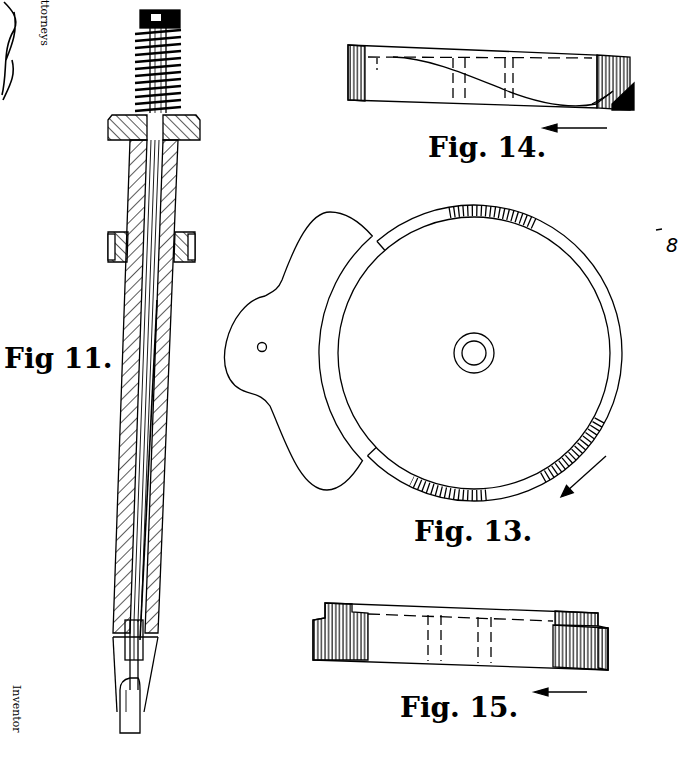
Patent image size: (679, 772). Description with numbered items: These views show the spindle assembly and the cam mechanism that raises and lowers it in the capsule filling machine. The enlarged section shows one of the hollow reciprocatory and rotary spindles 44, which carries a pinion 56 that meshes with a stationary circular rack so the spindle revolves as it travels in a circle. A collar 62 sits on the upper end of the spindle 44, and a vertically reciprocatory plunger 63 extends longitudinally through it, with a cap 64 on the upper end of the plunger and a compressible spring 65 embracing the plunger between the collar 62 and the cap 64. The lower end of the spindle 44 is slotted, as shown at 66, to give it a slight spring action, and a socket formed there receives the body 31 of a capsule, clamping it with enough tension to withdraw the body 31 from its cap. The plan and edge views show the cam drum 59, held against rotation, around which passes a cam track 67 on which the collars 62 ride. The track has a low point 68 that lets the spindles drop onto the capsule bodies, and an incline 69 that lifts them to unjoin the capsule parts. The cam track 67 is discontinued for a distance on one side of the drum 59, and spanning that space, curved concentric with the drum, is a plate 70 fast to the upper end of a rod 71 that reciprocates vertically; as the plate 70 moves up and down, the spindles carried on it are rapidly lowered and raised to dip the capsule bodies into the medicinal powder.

In FIG. 11, the body 31 is at (118, 726).
In FIG. 11, the spindle 44 is at (163, 454).
In FIG. 11, the pinion 56 is at (195, 247).
In FIG. 14, the cam drum 59 is at (577, 57).
In FIG. 13, the cam drum 59 is at (580, 297).
In FIG. 15, the cam drum 59 is at (580, 606).
In FIG. 11, the collar 62 is at (200, 131).
In FIG. 11, the plunger 63 is at (150, 300).
In FIG. 11, the cap 64 is at (181, 18).
In FIG. 11, the compressible spring 65 is at (233, 68).
In FIG. 11, the slot 66 is at (143, 677).
In FIG. 14, the cam track 67 is at (634, 88).
In FIG. 13, the cam track 67 is at (562, 249).
In FIG. 15, the cam track 67 is at (609, 652).
In FIG. 14, the low point 68 is at (604, 108).
In FIG. 14, the incline 69 is at (473, 75).
In FIG. 15, the incline 69 is at (606, 634).
In FIG. 13, the plate 70 is at (336, 214).
In FIG. 13, the rod 71 is at (265, 343).